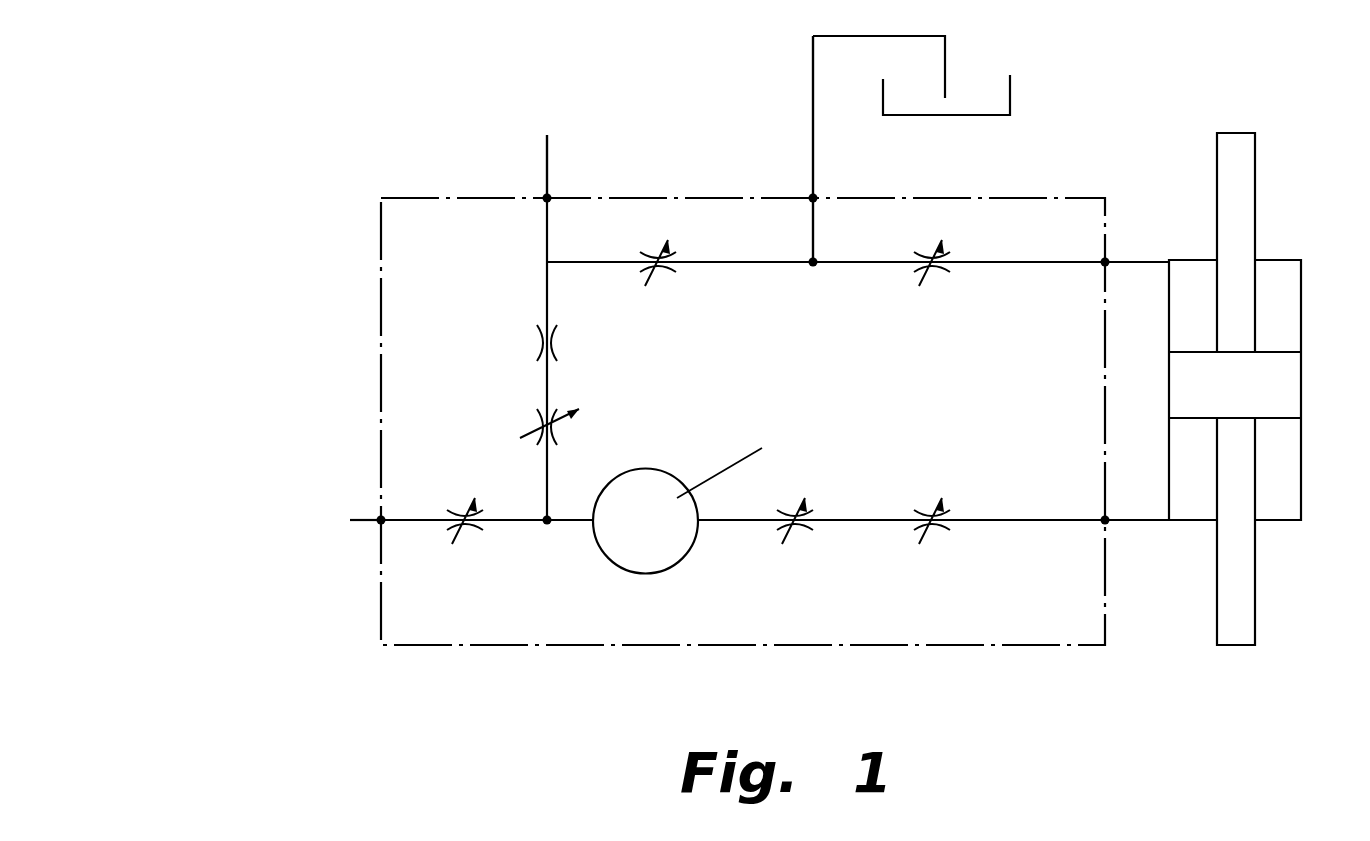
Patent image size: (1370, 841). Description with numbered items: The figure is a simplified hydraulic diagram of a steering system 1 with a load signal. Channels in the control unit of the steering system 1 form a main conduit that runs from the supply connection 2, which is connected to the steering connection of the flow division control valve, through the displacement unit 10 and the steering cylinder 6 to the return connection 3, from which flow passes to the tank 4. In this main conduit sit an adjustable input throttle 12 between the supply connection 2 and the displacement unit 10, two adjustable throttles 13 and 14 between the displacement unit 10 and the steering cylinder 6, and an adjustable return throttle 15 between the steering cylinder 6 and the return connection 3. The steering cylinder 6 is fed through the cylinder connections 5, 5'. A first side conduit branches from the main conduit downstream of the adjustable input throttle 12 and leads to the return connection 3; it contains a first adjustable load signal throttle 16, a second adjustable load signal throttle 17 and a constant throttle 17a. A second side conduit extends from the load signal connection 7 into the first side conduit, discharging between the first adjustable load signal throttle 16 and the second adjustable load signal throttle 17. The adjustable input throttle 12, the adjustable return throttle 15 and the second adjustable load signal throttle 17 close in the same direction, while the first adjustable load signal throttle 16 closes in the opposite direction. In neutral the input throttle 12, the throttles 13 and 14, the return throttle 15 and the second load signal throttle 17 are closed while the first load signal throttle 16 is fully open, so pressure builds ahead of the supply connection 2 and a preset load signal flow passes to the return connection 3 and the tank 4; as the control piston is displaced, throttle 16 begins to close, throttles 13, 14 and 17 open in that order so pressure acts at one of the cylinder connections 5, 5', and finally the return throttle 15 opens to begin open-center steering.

The steering system 1 is at (366, 270).
The supply connection 2 is at (366, 545).
The return connection 3 is at (822, 190).
The tank 4 is at (973, 84).
The cylinder connection 5 is at (1137, 558).
The cylinder connection 5' is at (1137, 219).
The steering cylinder 6 is at (1288, 292).
The load signal connection 7 is at (570, 188).
The displacement unit 10 is at (680, 563).
The adjustable input throttle 12 is at (450, 482).
The adjustable throttle 13 is at (812, 548).
The adjustable throttle 14 is at (943, 550).
The adjustable return throttle 15 is at (948, 278).
The first adjustable load signal throttle 16 is at (688, 266).
The second adjustable load signal throttle 17 is at (577, 430).
The constant throttle 17a is at (568, 346).